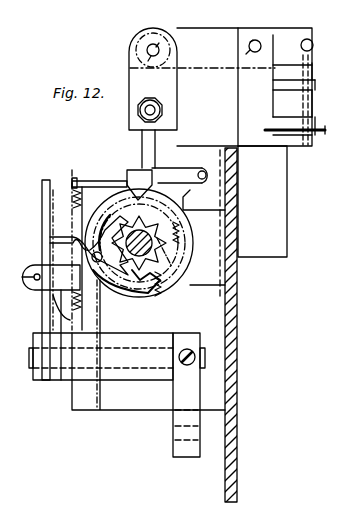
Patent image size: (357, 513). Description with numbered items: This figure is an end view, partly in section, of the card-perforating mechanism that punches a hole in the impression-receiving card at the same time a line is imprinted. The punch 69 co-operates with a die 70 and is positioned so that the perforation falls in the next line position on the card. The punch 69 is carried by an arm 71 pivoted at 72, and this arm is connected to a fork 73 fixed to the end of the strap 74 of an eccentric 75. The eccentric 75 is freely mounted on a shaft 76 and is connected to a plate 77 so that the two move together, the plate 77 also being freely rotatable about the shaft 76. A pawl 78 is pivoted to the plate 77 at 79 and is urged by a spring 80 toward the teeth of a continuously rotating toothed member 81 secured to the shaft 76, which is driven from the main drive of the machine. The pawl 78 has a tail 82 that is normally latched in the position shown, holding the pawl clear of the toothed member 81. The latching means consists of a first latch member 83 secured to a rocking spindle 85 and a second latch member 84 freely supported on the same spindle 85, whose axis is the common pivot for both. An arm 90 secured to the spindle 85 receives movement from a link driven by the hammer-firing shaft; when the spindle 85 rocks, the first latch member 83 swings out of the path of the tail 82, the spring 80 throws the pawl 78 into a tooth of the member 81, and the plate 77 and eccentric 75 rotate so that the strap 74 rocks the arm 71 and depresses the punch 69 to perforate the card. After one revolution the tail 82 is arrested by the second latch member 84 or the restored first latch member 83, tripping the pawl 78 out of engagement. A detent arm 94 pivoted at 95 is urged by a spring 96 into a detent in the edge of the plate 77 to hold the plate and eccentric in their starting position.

The punch 69 is at (300, 104).
The die 70 is at (308, 140).
The arm 71 is at (177, 36).
The pivot 72 is at (154, 44).
The fork 73 is at (178, 60).
The strap 74 is at (147, 165).
The eccentric 75 is at (183, 261).
The shaft 76 is at (157, 248).
The plate 77 is at (125, 293).
The pawl 78 is at (147, 293).
The pawl pivot 79 is at (101, 222).
The spring 80 is at (175, 286).
The toothed member 81 is at (153, 231).
The tail 82 is at (57, 233).
The first latch member 83 is at (72, 318).
The second latch member 84 is at (46, 180).
The rocking spindle 85 is at (27, 368).
The arm 90 is at (173, 443).
The detent arm 94 is at (172, 168).
The detent arm pivot 95 is at (203, 170).
The spring 96 is at (78, 181).